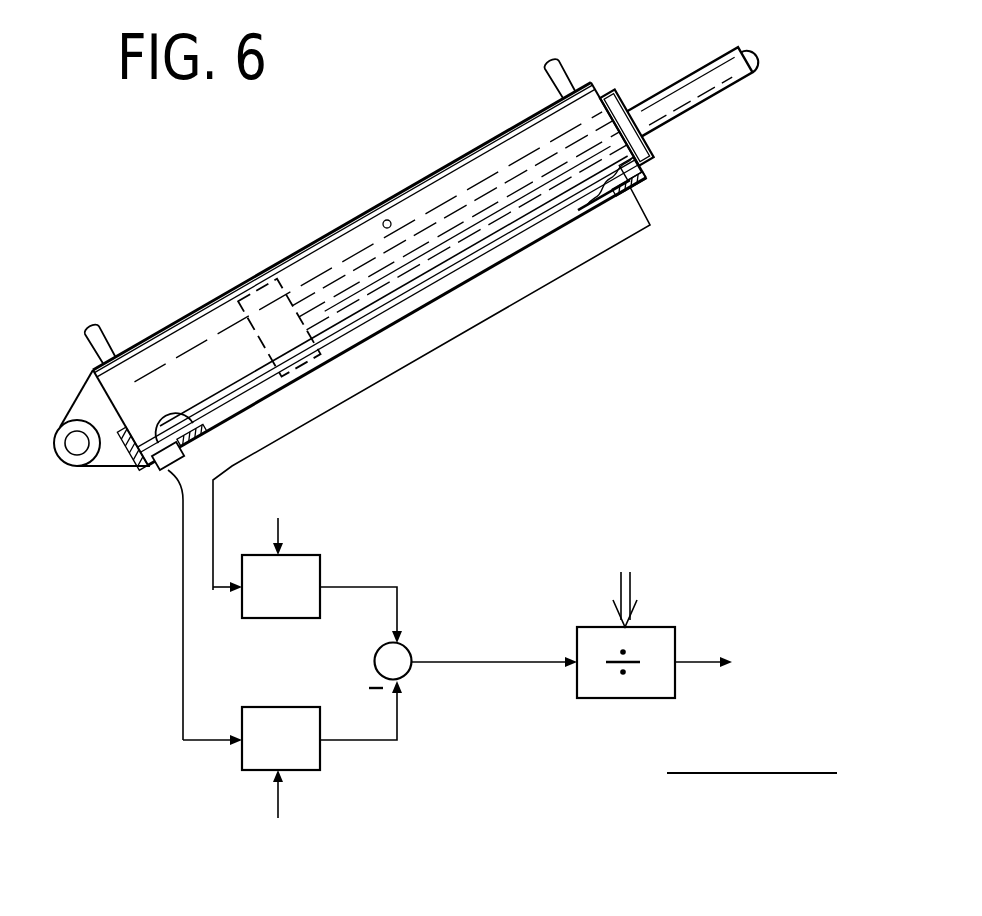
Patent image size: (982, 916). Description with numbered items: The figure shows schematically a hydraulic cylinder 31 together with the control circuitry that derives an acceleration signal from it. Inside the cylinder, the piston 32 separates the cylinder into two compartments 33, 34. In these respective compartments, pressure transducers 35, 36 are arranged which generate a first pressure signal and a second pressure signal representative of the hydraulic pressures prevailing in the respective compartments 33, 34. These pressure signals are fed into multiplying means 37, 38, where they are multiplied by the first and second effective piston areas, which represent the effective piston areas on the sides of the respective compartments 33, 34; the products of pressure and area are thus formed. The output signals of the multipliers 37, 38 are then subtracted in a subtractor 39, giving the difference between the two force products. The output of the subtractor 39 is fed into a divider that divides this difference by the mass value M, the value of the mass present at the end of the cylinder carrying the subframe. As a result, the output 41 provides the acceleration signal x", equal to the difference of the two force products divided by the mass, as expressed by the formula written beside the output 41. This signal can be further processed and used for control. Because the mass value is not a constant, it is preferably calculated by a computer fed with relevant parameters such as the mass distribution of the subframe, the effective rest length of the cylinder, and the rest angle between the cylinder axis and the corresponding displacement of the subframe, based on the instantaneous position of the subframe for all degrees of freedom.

The hydraulic cylinder 31 is at (469, 138).
The piston 32 is at (285, 298).
The compartment 33 is at (381, 222).
The compartment 34 is at (175, 433).
The pressure transducer 35 is at (624, 192).
The pressure transducer 36 is at (160, 445).
The multiplying means 37 is at (298, 577).
The multiplying means 38 is at (300, 727).
The subtractor 39 is at (378, 661).
The output 41 is at (730, 728).